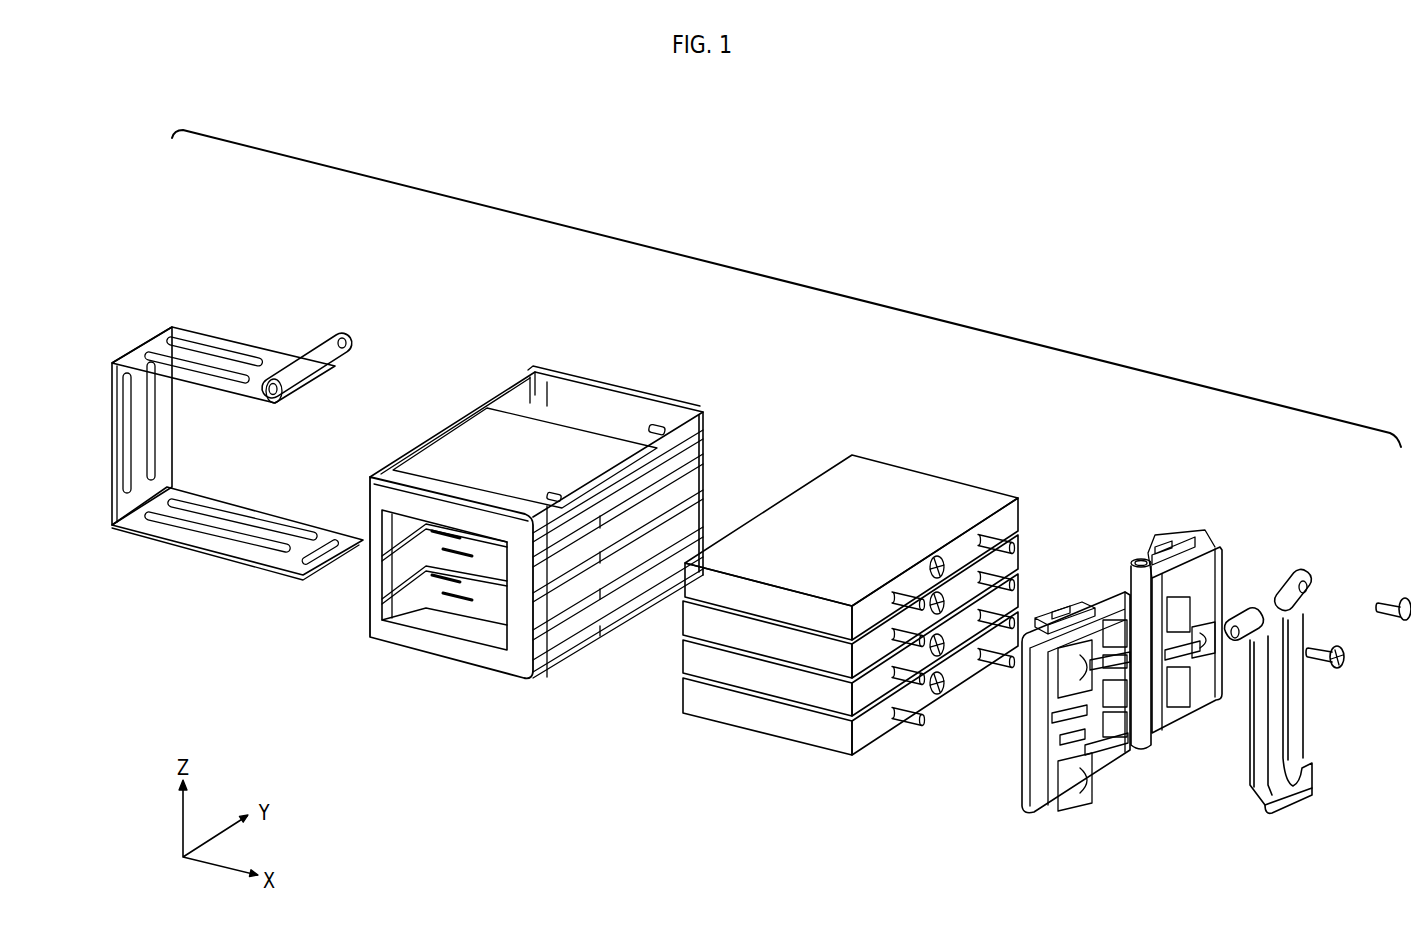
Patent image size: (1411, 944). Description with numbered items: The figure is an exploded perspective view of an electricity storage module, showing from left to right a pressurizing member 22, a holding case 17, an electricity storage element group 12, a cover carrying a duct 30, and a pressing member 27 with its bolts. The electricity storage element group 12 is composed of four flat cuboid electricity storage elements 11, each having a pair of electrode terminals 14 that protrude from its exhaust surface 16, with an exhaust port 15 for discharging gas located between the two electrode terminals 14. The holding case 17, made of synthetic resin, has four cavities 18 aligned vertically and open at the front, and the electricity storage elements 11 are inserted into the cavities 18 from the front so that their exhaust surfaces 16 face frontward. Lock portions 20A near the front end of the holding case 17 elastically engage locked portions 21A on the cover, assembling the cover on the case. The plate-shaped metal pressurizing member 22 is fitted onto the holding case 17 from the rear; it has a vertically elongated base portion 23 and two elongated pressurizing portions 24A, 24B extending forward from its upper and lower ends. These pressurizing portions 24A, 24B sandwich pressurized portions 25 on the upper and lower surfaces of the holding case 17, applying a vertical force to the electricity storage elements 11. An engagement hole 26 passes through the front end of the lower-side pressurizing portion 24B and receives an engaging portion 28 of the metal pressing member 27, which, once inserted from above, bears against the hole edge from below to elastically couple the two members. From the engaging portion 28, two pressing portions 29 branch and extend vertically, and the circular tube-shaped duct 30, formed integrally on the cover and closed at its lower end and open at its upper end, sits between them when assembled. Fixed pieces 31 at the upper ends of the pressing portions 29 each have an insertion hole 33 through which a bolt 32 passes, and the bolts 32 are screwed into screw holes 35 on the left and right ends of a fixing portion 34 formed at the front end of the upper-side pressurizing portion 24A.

The electricity storage element 11 is at (827, 655).
The electricity storage element group 12 is at (815, 625).
The electrode terminal 14 is at (949, 592).
The exhaust port 15 is at (950, 585).
The exhaust surface 16 is at (843, 624).
The holding case 17 is at (552, 524).
The cavity 18 is at (633, 542).
The lock portion 20A is at (605, 413).
The locked portion 21A is at (1122, 643).
The pressurizing member 22 is at (232, 437).
The base portion 23 is at (130, 422).
The upper-side pressurizing portion 24A is at (223, 341).
The lower-side pressurizing portion 24B is at (237, 550).
The pressurized portion 25 is at (525, 413).
The engagement hole 26 is at (320, 586).
The pressing member 27 is at (1282, 689).
The engaging portion 28 is at (1296, 824).
The pressing portion 29 is at (1275, 709).
The duct 30 is at (1161, 611).
The fixed piece 31 is at (1268, 581).
The bolt 32 is at (1358, 609).
The insertion hole 33 is at (1288, 655).
The fixing portion 34 is at (306, 343).
The screw hole 35 is at (323, 371).